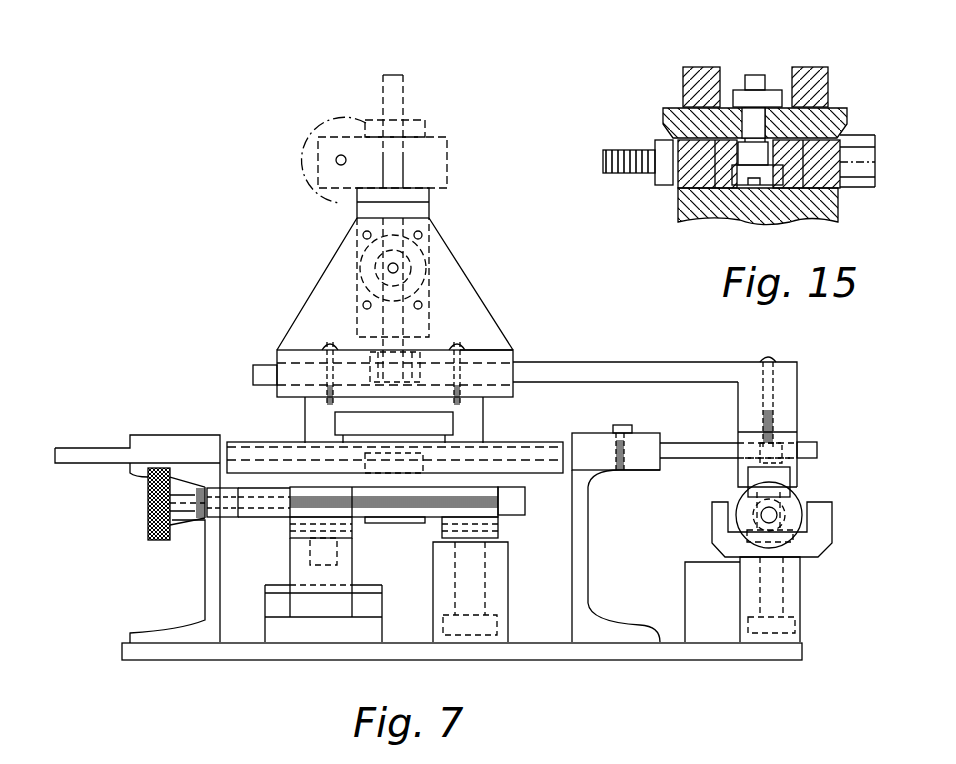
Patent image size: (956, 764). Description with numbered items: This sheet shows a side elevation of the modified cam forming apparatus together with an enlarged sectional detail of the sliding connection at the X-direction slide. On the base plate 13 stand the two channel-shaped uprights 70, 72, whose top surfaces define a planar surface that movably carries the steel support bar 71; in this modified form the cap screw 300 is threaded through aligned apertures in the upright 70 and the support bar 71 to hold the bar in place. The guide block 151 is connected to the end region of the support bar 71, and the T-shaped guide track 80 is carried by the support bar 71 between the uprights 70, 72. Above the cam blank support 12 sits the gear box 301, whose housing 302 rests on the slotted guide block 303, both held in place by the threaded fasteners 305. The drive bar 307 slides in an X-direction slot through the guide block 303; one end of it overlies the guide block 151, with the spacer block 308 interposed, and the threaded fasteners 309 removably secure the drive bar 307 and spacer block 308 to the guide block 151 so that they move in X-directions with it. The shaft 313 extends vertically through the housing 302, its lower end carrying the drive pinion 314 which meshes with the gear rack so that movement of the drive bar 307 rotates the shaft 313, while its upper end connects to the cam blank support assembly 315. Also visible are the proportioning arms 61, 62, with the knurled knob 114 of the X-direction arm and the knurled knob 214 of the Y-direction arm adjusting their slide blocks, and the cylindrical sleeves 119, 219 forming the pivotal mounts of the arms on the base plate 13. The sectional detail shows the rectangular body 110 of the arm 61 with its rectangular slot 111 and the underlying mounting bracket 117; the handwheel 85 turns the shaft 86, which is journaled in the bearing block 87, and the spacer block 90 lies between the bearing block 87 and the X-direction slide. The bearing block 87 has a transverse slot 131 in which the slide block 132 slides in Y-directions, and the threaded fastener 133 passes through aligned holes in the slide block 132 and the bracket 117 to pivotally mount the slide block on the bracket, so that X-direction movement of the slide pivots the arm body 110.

In FIG. 7, the cam blank support 12 is at (484, 400).
In FIG. 7, the base plate 13 is at (703, 661).
In FIG. 7, the X-direction proportioning arm 61 is at (834, 516).
In FIG. 7, the Y-direction proportioning arm 62 is at (275, 537).
In FIG. 7, the upright 70 is at (590, 545).
In FIG. 7, the support bar 71 is at (680, 452).
In FIG. 7, the upright 72 is at (137, 539).
In FIG. 7, the guide track 80 is at (394, 427).
In FIG. 7, the knurled knob 114 is at (788, 492).
In FIG. 7, the cylindrical sleeve 119 is at (800, 583).
In FIG. 7, the guide block 151 is at (798, 433).
In FIG. 7, the knurled knob 214 is at (147, 535).
In FIG. 7, the cylindrical sleeve 219 is at (500, 575).
In FIG. 7, the cap screw 300 is at (630, 428).
In FIG. 7, the gear box 301 is at (460, 253).
In FIG. 7, the housing 302 is at (463, 293).
In FIG. 7, the slotted guide block 303 is at (277, 350).
In FIG. 7, the threaded fasteners 305 is at (325, 345).
In FIG. 7, the drive bar 307 is at (595, 368).
In FIG. 7, the spacer block 308 is at (798, 404).
In FIG. 7, the threaded fasteners 309 is at (775, 360).
In FIG. 7, the shaft 313 is at (398, 362).
In FIG. 7, the drive pinion 314 is at (487, 352).
In FIG. 7, the cam blank support assembly 315 is at (437, 167).
In FIG. 15, the handwheel 85 is at (855, 140).
In FIG. 15, the shaft 86 is at (640, 175).
In FIG. 15, the bearing block 87 is at (845, 180).
In FIG. 15, the spacer block 90 is at (820, 215).
In FIG. 15, the rectangular body 110 is at (818, 70).
In FIG. 15, the rectangular slot 111 is at (790, 67).
In FIG. 15, the mounting bracket 117 is at (838, 112).
In FIG. 15, the slot 131 is at (720, 192).
In FIG. 15, the slide block 132 is at (790, 192).
In FIG. 15, the threaded fastener 133 is at (755, 75).